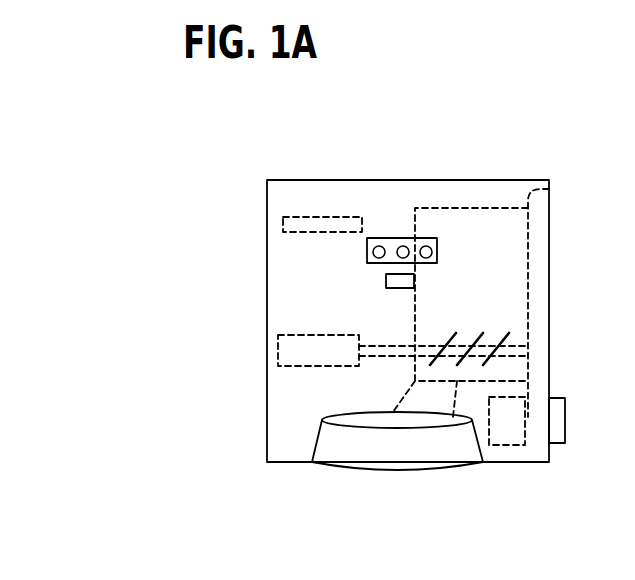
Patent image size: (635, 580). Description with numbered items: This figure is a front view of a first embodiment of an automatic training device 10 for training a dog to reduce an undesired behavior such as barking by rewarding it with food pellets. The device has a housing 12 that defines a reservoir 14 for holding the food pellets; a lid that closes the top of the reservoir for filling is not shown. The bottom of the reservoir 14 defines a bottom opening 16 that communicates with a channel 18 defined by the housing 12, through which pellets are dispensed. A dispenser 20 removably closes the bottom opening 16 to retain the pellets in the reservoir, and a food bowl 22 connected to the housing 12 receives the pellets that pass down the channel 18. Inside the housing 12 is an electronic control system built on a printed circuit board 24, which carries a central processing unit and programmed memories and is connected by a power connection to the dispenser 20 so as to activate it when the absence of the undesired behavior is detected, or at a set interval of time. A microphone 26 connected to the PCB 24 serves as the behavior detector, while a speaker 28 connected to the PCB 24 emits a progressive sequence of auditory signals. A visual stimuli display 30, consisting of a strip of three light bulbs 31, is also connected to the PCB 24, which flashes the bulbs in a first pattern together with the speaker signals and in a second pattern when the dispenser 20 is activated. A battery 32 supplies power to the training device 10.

The automatic training device 10 is at (265, 165).
The housing 12 is at (267, 200).
The reservoir 14 is at (549, 189).
The bottom opening 16 is at (490, 342).
The channel 18 is at (440, 398).
The dispenser 20 is at (278, 352).
The food bowl 22 is at (318, 438).
The printed circuit board 24 is at (300, 226).
The microphone 26 is at (378, 277).
The speaker 28 is at (557, 445).
The visual stimuli display 30 is at (385, 237).
The light bulbs 31 is at (430, 245).
The battery 32 is at (500, 448).